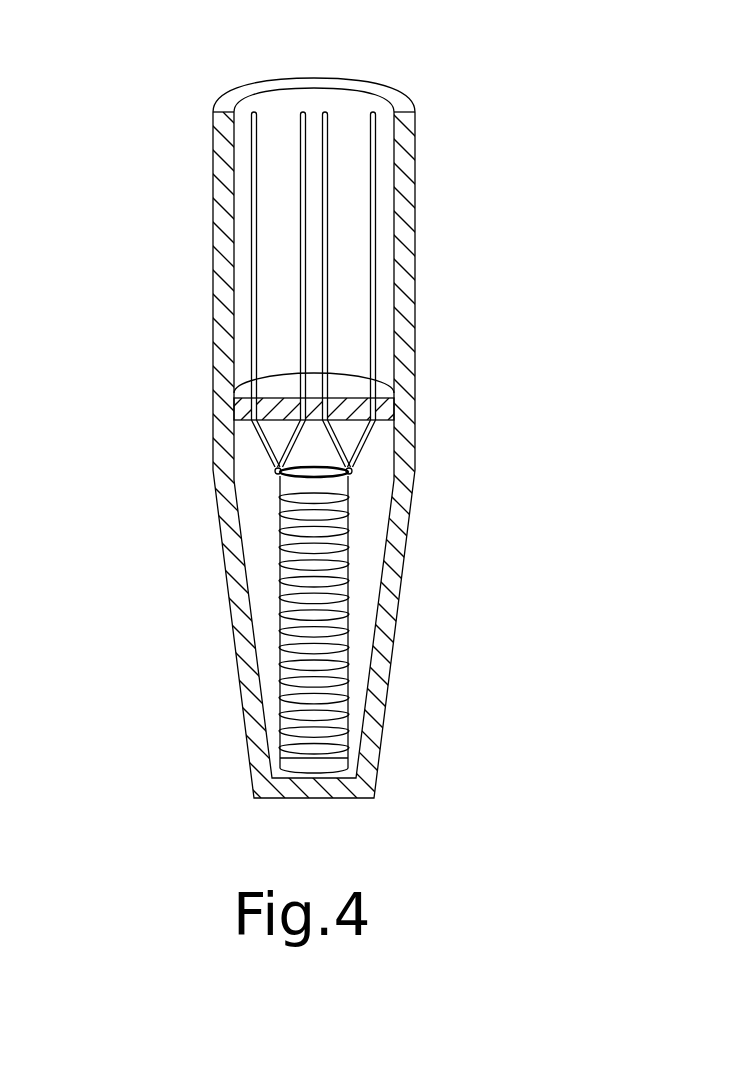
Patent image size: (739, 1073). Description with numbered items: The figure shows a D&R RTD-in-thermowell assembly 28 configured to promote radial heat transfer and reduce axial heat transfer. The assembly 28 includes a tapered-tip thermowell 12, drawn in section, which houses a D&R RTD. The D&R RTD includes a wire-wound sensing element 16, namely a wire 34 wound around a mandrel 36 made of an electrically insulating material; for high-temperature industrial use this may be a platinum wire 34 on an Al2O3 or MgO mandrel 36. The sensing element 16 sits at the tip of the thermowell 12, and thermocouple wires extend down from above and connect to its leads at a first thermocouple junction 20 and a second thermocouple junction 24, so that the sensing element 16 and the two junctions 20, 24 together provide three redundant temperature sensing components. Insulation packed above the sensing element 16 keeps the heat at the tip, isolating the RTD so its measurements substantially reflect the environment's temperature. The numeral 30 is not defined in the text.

The D&R RTD-in-thermowell assembly 28 is at (496, 136).
The tapered-tip thermowell 12 is at (280, 490).
The chamber 30 is at (258, 562).
The first thermocouple junction 20 is at (273, 459).
The second thermocouple junction 24 is at (353, 471).
The mandrel 36 is at (347, 480).
The wire 34 is at (348, 494).
The sensing element 16 is at (354, 593).